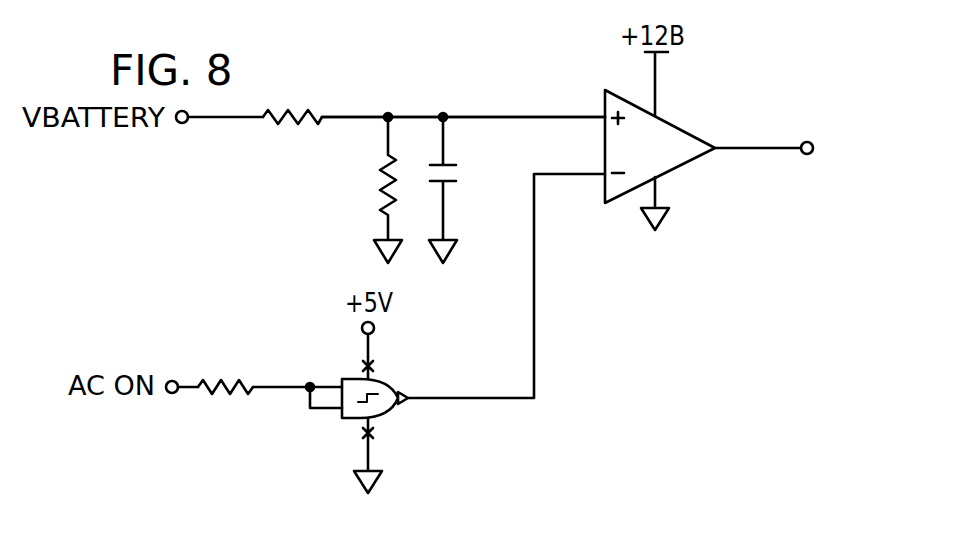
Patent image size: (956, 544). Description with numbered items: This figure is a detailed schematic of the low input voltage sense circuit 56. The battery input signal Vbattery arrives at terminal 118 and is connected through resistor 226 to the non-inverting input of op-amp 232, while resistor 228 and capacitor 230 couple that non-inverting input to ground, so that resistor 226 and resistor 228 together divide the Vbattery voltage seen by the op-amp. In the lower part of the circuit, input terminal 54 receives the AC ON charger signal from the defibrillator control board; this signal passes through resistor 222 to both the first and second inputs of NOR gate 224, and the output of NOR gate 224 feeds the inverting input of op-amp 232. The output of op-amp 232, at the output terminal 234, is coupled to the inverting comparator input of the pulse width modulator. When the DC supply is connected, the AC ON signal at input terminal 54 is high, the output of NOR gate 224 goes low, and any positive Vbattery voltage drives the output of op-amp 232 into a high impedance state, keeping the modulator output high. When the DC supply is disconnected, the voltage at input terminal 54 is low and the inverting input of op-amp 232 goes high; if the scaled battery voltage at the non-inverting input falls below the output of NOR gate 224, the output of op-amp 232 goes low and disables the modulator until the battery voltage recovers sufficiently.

The terminal 118 is at (180, 126).
The resistor 226 is at (284, 108).
The low input voltage sense circuit 56 is at (500, 82).
The resistor 228 is at (385, 184).
The capacitor 230 is at (455, 175).
The op-amp 232 is at (672, 120).
The output terminal 234 is at (805, 142).
The input terminal 54 is at (170, 382).
The resistor 222 is at (217, 380).
The NOR gate 224 is at (382, 380).